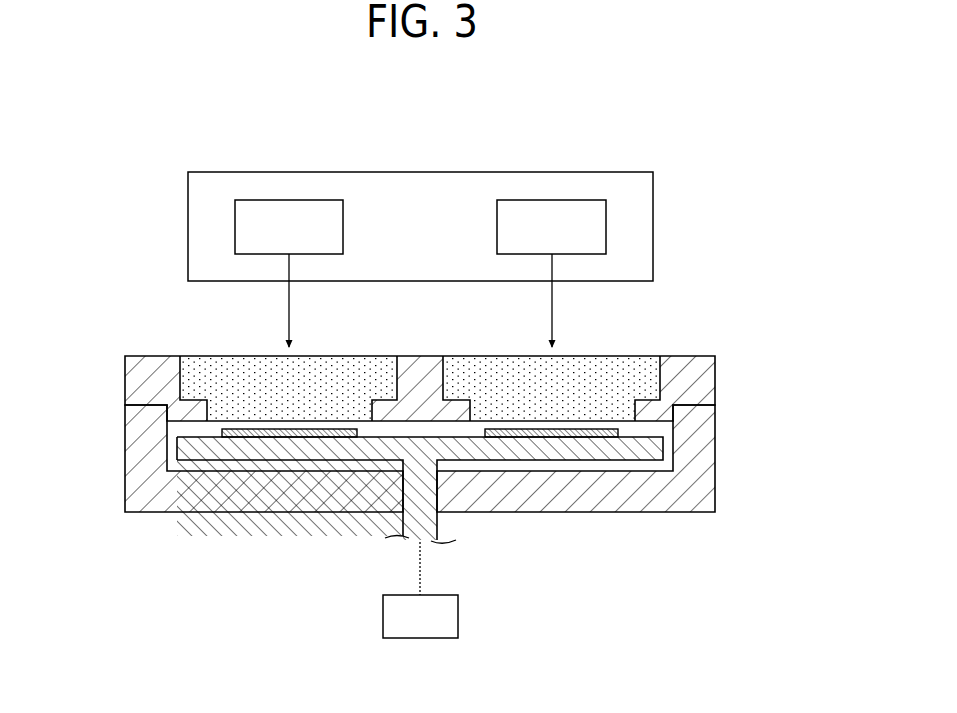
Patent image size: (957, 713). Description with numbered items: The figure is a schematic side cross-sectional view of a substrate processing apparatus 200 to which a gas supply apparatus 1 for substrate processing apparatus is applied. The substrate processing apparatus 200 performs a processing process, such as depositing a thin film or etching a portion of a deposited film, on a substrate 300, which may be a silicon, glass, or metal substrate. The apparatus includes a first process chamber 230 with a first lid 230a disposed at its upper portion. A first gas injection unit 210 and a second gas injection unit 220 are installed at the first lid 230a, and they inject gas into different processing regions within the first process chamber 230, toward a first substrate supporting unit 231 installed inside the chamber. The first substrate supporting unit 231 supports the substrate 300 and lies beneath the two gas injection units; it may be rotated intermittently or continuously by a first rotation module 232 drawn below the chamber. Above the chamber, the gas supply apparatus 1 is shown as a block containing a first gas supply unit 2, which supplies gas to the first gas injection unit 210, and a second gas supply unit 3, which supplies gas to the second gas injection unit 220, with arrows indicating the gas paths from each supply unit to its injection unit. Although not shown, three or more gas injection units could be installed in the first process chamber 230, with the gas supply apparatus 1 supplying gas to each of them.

The gas supply apparatus 1 is at (204, 168).
The first gas supply unit 2 is at (282, 244).
The second gas supply unit 3 is at (545, 244).
The substrate processing apparatus 200 is at (121, 351).
The first gas injection unit 210 is at (212, 375).
The second gas injection unit 220 is at (628, 372).
The first process chamber 230 is at (118, 463).
The first lid 230a is at (124, 381).
The first substrate supporting unit 231 is at (300, 452).
The first rotation module 232 is at (400, 630).
The substrate 300 is at (252, 438).